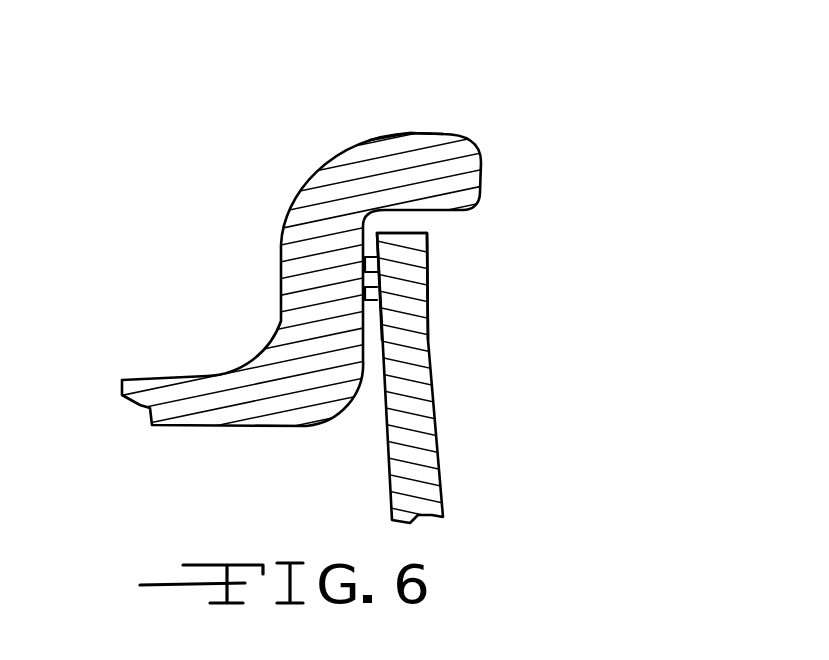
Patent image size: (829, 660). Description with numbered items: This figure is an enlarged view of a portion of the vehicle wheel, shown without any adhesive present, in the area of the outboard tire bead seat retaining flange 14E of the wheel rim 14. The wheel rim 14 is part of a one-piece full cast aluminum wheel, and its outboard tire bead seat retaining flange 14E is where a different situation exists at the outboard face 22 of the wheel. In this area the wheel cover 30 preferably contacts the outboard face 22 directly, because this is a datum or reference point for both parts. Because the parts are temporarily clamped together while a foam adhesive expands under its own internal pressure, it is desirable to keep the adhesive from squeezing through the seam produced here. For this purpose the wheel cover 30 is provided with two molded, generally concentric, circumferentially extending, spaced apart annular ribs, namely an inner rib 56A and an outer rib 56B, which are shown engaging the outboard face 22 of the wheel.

The wheel rim 14 is at (294, 181).
The outboard tire bead seat retaining flange 14E is at (373, 134).
The outer rib 56B is at (367, 263).
The inner rib 56A is at (370, 298).
The outboard face 22 is at (367, 325).
The wheel cover 30 is at (445, 446).